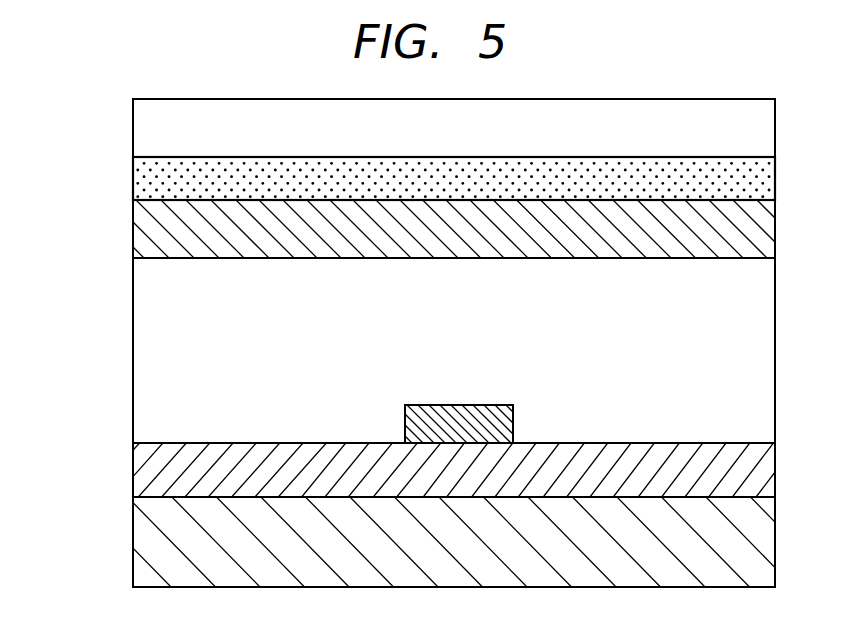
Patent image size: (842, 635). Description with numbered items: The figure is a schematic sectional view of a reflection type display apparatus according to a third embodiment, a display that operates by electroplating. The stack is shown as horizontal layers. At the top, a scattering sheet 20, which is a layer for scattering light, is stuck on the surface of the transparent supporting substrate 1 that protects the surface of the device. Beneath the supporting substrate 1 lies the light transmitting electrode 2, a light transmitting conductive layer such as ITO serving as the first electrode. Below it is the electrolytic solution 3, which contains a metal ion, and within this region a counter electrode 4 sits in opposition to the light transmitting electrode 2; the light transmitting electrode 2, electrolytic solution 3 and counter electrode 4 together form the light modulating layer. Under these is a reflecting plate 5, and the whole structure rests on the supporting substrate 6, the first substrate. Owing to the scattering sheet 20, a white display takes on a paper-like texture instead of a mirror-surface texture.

The scattering sheet 20 is at (144, 131).
The supporting substrate 1 is at (143, 180).
The light transmitting electrode 2 is at (144, 235).
The electrolytic solution 3 is at (143, 358).
The counter electrode 4 is at (484, 418).
The reflecting plate 5 is at (143, 467).
The supporting substrate 6 is at (142, 540).